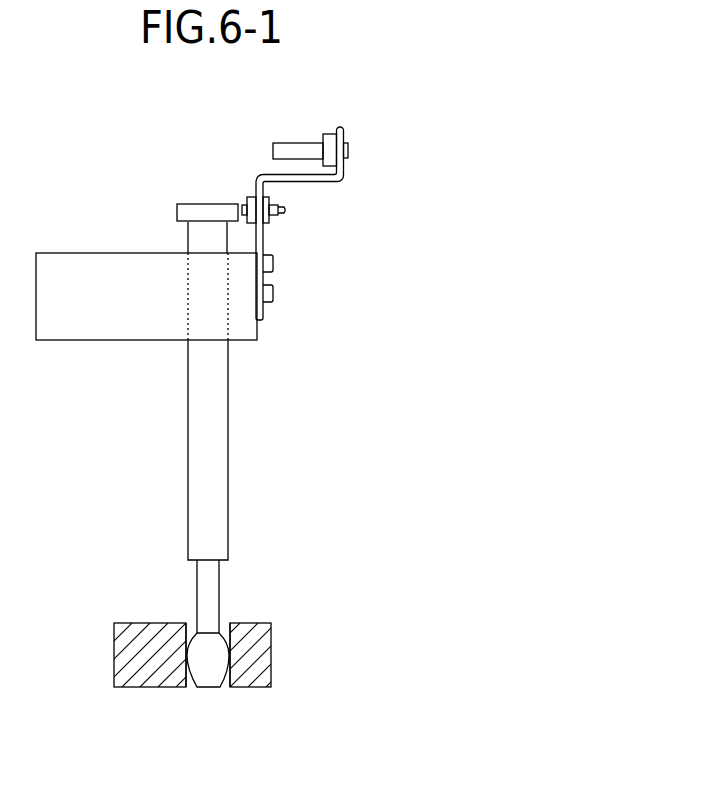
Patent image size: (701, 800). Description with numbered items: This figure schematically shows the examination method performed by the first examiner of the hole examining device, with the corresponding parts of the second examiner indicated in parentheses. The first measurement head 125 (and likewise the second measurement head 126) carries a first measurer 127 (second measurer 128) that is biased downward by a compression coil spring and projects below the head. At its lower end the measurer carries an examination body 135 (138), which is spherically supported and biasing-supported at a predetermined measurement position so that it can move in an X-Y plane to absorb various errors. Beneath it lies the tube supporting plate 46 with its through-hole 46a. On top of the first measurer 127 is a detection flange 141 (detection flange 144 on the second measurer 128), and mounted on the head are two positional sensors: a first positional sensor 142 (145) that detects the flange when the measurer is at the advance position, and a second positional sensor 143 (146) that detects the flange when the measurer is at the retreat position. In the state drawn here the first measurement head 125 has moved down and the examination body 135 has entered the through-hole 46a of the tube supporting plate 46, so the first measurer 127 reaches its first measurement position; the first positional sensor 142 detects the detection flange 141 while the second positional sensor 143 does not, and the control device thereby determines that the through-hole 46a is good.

The first measurement head 125 is at (146, 327).
The second measurement head 126 is at (70, 340).
The first measurer 127 is at (273, 427).
The second measurer 128 is at (227, 455).
The detection flange 141 is at (142, 214).
The detection flange 144 is at (177, 208).
The first positional sensor 142 is at (248, 221).
The first positional sensor 145 is at (252, 197).
The second positional sensor 143 is at (320, 124).
The second positional sensor 146 is at (290, 142).
The examination body 135 is at (292, 660).
The ball end 138 is at (218, 653).
The tube supporting plate 46 is at (143, 687).
The through-hole 46a is at (225, 687).